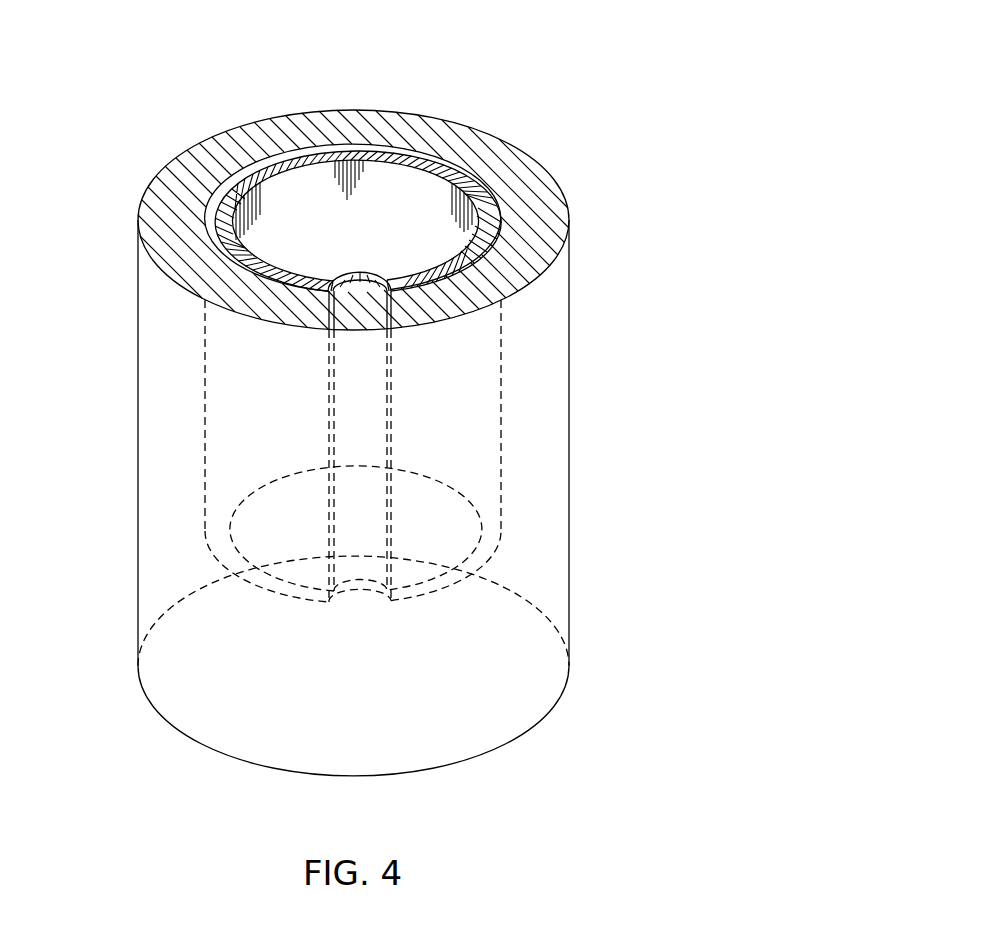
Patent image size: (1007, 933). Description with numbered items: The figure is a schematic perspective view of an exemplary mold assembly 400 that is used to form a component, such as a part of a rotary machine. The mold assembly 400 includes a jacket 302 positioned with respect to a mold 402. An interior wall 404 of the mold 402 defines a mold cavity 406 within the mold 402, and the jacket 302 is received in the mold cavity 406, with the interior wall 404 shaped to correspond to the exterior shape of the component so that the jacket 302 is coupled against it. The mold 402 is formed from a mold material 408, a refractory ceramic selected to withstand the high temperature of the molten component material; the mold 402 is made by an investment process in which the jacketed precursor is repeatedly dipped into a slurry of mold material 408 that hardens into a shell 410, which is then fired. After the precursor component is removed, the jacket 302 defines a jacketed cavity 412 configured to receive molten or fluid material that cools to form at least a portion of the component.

The mold assembly 400 is at (560, 50).
The jacket 302 is at (311, 152).
The mold 402 is at (388, 110).
The interior wall 404 is at (455, 170).
The mold cavity 406 is at (498, 473).
The mold material 408 is at (553, 352).
The shell 410 is at (138, 368).
The jacketed cavity 412 is at (287, 200).